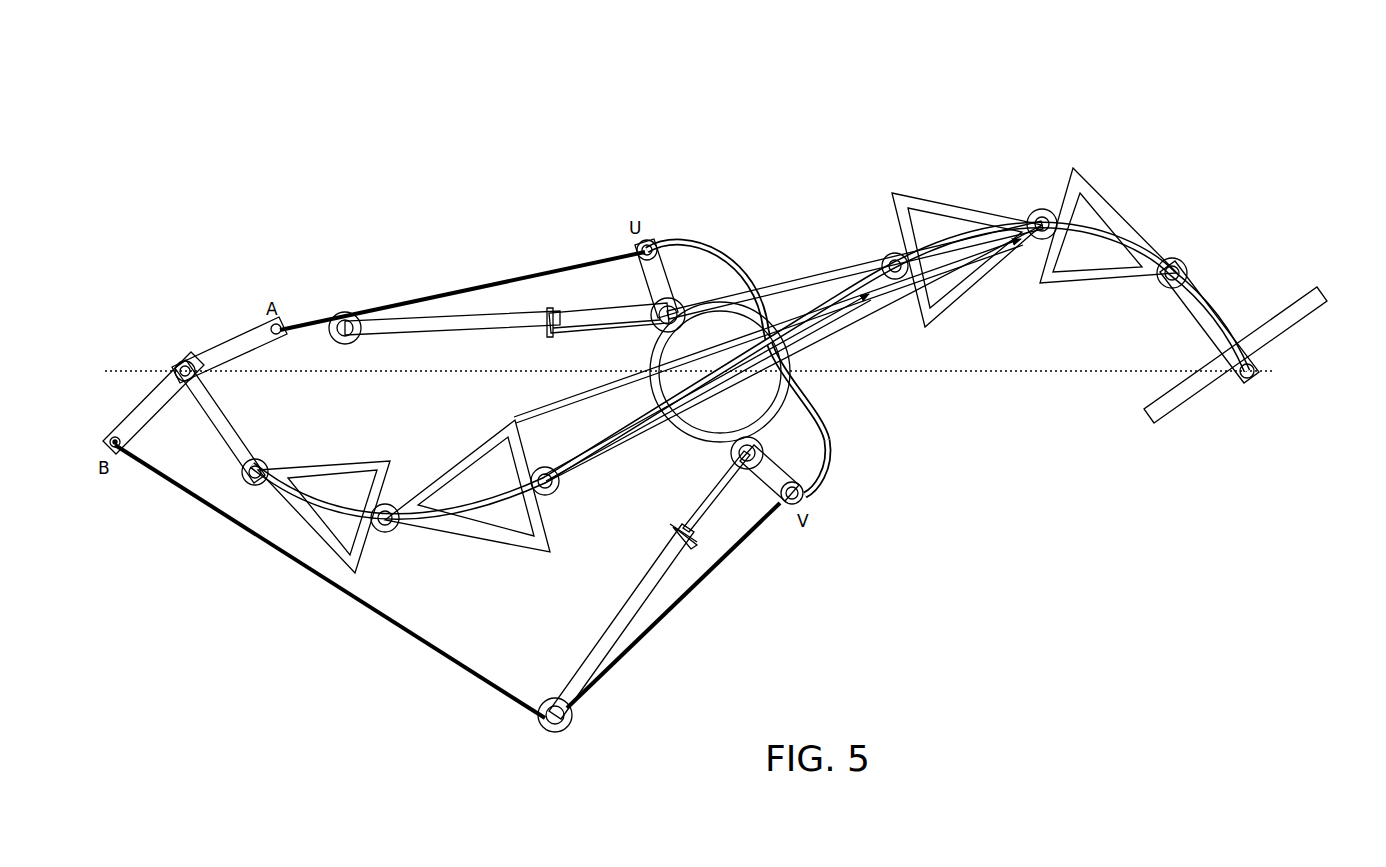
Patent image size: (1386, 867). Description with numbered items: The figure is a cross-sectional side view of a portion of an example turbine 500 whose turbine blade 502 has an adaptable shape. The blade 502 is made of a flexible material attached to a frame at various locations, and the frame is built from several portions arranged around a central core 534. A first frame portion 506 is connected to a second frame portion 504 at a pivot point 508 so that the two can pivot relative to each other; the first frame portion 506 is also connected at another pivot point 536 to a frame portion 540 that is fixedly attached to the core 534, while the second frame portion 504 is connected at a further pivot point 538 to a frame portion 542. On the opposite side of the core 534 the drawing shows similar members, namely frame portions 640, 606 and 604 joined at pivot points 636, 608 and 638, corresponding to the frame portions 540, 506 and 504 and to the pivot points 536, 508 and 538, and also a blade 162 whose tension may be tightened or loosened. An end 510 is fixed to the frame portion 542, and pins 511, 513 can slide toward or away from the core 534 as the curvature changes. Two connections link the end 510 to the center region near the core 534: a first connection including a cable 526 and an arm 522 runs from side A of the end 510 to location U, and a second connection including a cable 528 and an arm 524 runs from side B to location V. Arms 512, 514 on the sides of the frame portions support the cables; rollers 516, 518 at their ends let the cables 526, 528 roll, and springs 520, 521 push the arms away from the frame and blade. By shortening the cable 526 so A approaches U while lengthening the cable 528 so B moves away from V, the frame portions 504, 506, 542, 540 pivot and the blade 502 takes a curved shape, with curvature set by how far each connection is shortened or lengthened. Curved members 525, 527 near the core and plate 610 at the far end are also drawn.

The turbine 500 is at (280, 150).
The blade 162 is at (860, 152).
The turbine blade 502 is at (488, 508).
The second frame portion 504 is at (372, 458).
The first frame portion 506 is at (467, 455).
The pivot point 508 is at (397, 533).
The end 510 is at (237, 330).
The pin 511 is at (178, 362).
The arm 512 is at (498, 326).
The pin 513 is at (1247, 382).
The arm 514 is at (596, 650).
The roller 516 is at (345, 310).
The roller 518 is at (546, 728).
The spring 520 is at (603, 335).
The spring 521 is at (693, 497).
The arm 522 is at (662, 268).
The arm 524 is at (785, 453).
The arcuate member 525 is at (718, 248).
The cable 526 is at (505, 282).
The arcuate member 527 is at (832, 458).
The cable 528 is at (405, 635).
The core 534 is at (774, 312).
The pivot point 536 is at (537, 468).
The pivot point 538 is at (251, 488).
The frame portion 540 is at (590, 478).
The frame portion 542 is at (240, 430).
The frame portion 604 is at (1108, 200).
The frame portion 606 is at (985, 205).
The pivot point 608 is at (1036, 240).
The plate 610 is at (1297, 328).
The pivot point 636 is at (896, 282).
The pivot point 638 is at (1195, 266).
The frame portion 640 is at (842, 282).